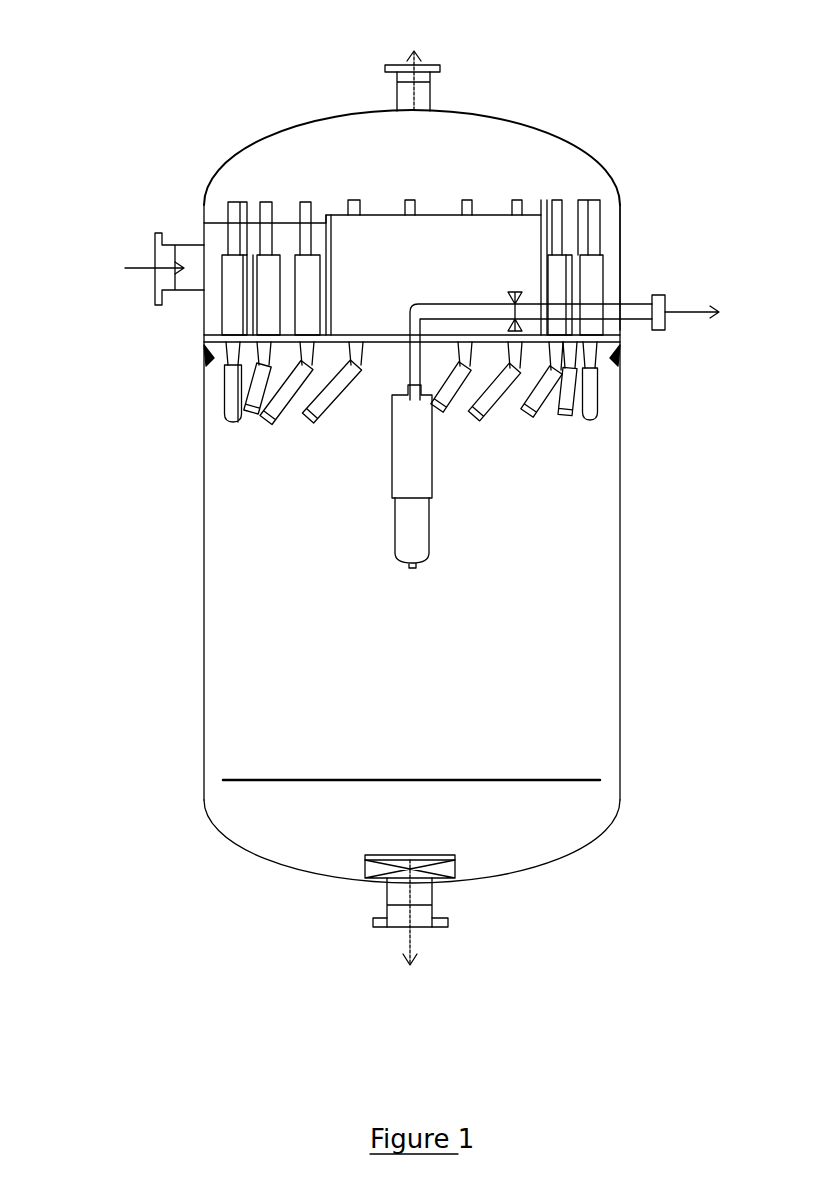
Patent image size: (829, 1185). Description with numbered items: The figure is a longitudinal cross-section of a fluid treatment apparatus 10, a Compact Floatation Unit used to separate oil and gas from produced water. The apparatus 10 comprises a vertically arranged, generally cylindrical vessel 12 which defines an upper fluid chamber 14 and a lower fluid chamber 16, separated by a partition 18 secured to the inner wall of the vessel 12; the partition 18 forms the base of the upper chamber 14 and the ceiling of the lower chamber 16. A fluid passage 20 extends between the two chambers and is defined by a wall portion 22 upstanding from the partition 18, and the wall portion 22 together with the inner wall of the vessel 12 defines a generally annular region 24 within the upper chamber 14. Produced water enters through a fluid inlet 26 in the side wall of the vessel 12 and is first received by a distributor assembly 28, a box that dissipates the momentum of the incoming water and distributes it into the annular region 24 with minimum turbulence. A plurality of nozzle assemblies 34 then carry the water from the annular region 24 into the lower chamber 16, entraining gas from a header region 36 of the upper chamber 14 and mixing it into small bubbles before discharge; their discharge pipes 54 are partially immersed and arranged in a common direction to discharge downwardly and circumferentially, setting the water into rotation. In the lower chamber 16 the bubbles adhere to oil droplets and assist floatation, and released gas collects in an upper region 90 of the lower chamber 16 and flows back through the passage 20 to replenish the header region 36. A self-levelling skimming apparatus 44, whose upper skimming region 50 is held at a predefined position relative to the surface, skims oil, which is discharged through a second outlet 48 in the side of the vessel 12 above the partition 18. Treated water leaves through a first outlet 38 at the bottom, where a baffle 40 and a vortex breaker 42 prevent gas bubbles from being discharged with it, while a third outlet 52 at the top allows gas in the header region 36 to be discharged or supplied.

The fluid treatment apparatus 10 is at (215, 85).
The vessel 12 is at (204, 545).
The upper fluid chamber 14 is at (622, 205).
The lower fluid chamber 16 is at (575, 612).
The partition 18 is at (210, 338).
The fluid passage 20 is at (520, 235).
The wall portion 22 is at (545, 200).
The annular region 24 is at (607, 268).
The fluid inlet 26 is at (155, 287).
The distributor assembly 28 is at (226, 245).
The nozzle assemblies 34 is at (210, 362).
The header region 36 is at (527, 138).
The first outlet 38 is at (438, 903).
The baffle 40 is at (552, 780).
The vortex breaker 42 is at (455, 868).
The skimming apparatus 44 is at (392, 498).
The second outlet 48 is at (657, 330).
The upper skimming region 50 is at (392, 428).
The third outlet 52 is at (441, 90).
The discharge pipes 54 is at (306, 421).
The upper region of the lower chamber 90 is at (460, 412).